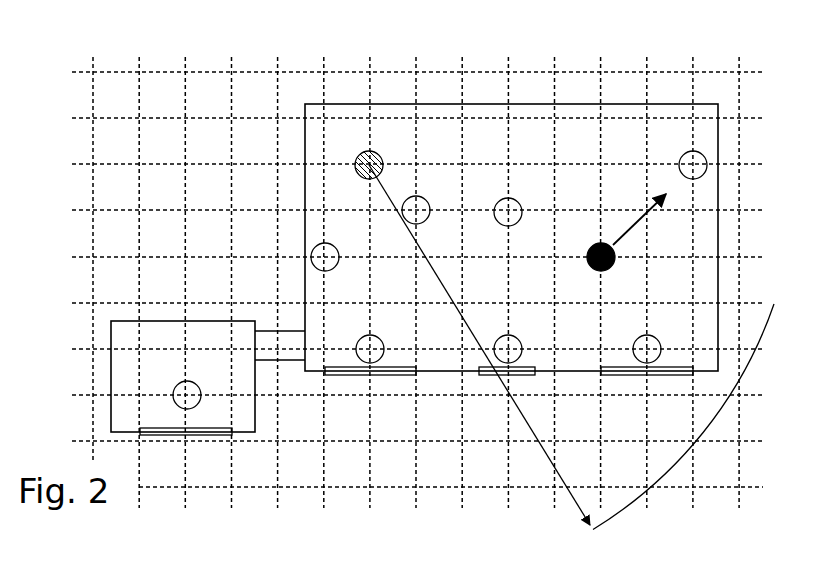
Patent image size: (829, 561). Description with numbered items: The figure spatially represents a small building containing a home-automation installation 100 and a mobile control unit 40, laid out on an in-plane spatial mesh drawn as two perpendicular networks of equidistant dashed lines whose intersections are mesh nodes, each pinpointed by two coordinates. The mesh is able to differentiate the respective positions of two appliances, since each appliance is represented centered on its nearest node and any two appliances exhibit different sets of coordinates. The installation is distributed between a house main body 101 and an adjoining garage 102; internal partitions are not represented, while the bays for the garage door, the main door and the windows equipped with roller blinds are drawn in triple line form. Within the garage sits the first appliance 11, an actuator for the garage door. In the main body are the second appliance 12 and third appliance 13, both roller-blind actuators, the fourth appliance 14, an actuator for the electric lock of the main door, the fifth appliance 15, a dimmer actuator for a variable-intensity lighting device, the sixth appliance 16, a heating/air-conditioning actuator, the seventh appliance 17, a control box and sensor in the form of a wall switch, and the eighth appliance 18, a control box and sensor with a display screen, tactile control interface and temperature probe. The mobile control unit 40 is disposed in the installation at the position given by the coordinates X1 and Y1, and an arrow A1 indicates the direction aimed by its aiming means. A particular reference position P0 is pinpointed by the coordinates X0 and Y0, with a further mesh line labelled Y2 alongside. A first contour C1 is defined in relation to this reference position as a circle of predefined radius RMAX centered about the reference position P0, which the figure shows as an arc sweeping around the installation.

The first appliance 11 is at (187, 395).
The second appliance 12 is at (370, 349).
The third appliance 13 is at (647, 349).
The fourth appliance 14 is at (508, 349).
The fifth appliance 15 is at (508, 212).
The sixth appliance 16 is at (693, 165).
The seventh appliance 17 is at (325, 257).
The eighth appliance 18 is at (416, 210).
The mobile control unit 40 is at (593, 268).
The home-automation installation 100 is at (361, 462).
The house main body 101 is at (305, 150).
The garage 102 is at (150, 321).
The reference position P0 is at (372, 163).
The arrow A1 is at (639, 219).
The first contour C1 is at (688, 407).
The predefined radius RMAX is at (479, 349).
The coordinate X0 is at (72, 164).
The coordinate X1 is at (72, 257).
The coordinate Y0 is at (370, 56).
The coordinate Y1 is at (601, 56).
The Y axis line Y2 is at (693, 56).